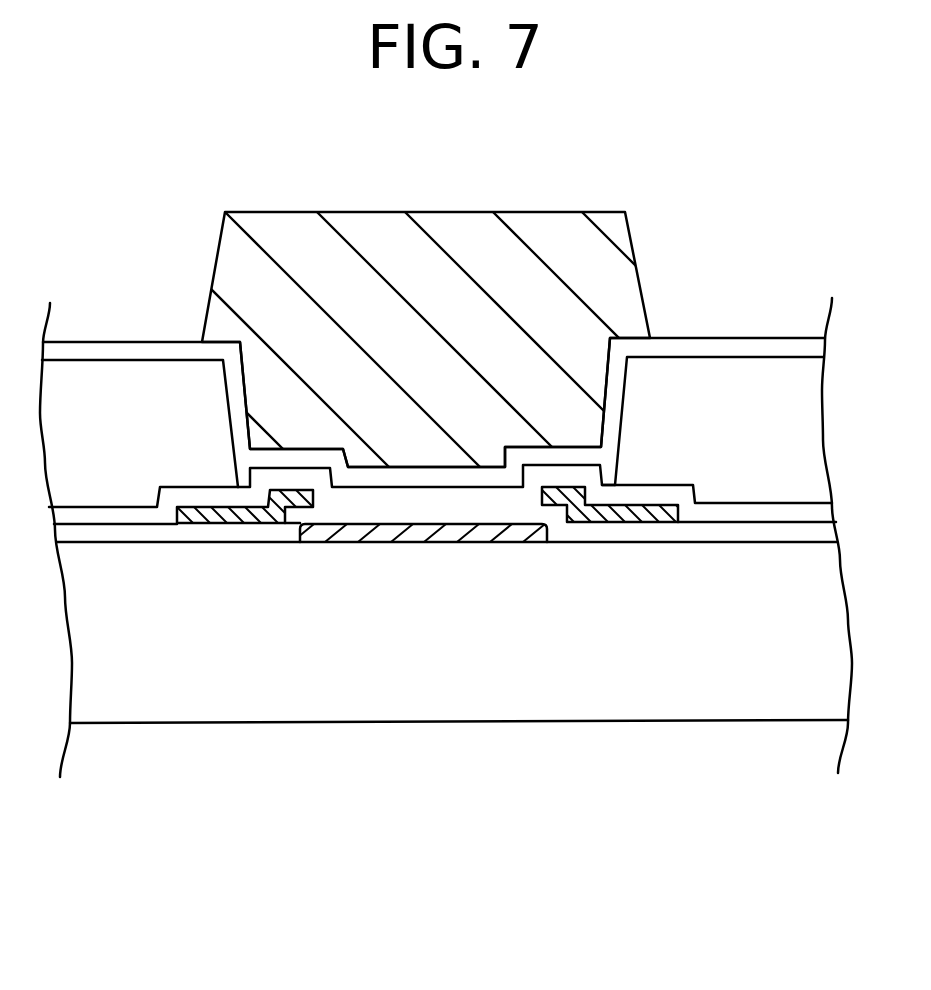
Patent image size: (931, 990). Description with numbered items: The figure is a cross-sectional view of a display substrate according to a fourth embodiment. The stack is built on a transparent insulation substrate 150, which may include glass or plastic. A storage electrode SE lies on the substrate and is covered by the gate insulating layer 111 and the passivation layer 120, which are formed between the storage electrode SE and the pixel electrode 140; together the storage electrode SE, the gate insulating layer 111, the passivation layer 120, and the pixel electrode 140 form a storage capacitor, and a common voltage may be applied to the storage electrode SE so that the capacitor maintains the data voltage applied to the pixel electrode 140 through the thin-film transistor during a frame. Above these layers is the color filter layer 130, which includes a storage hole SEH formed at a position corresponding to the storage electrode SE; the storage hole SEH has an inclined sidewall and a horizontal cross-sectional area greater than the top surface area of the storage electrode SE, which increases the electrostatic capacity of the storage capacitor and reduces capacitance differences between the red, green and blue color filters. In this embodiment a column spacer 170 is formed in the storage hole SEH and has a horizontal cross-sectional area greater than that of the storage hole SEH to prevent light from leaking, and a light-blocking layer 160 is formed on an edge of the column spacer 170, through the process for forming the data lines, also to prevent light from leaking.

The gate insulating layer 111 is at (88, 538).
The passivation layer 120 is at (158, 525).
The color filter layer 130 is at (712, 458).
The pixel electrode 140 is at (487, 478).
The transparent insulation substrate 150 is at (788, 667).
The light-blocking layer 160 is at (249, 513).
The column spacer 170 is at (330, 420).
The storage electrode SE is at (395, 537).
The storage hole SEH is at (617, 423).